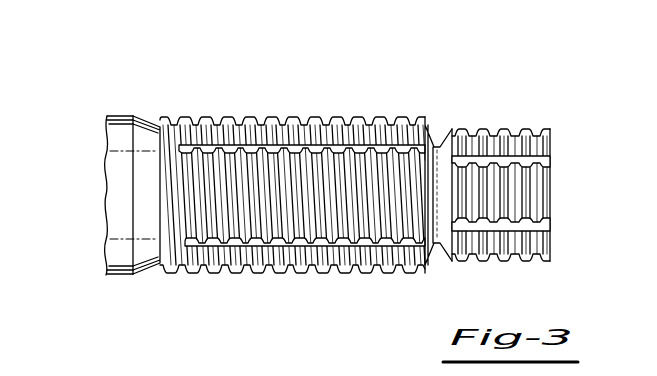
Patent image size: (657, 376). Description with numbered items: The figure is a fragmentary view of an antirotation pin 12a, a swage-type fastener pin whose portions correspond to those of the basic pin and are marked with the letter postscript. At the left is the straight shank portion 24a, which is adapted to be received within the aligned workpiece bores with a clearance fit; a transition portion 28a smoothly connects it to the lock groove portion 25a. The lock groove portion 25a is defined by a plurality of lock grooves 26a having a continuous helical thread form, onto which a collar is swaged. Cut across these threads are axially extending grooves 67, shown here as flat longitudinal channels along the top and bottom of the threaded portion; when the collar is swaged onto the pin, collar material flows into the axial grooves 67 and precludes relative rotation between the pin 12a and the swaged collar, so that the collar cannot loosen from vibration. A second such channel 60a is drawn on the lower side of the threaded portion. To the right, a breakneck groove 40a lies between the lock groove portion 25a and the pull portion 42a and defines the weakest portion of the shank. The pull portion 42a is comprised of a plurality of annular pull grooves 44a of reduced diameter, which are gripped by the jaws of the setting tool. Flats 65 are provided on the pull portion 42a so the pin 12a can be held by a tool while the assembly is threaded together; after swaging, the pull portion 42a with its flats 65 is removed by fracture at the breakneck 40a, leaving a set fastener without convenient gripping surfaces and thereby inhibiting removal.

The pin 12a is at (330, 169).
The straight shank portion 24a is at (120, 190).
The transition portion 28a is at (140, 141).
The lock groove portion 25a is at (250, 105).
The lock grooves 26a is at (292, 155).
The axially extending grooves 67 is at (188, 149).
The lower longitudinal flat 60a is at (240, 273).
The breakneck groove 40a is at (440, 142).
The pull portion 42a is at (542, 190).
The pull grooves 44a is at (492, 130).
The flats 65 is at (540, 223).